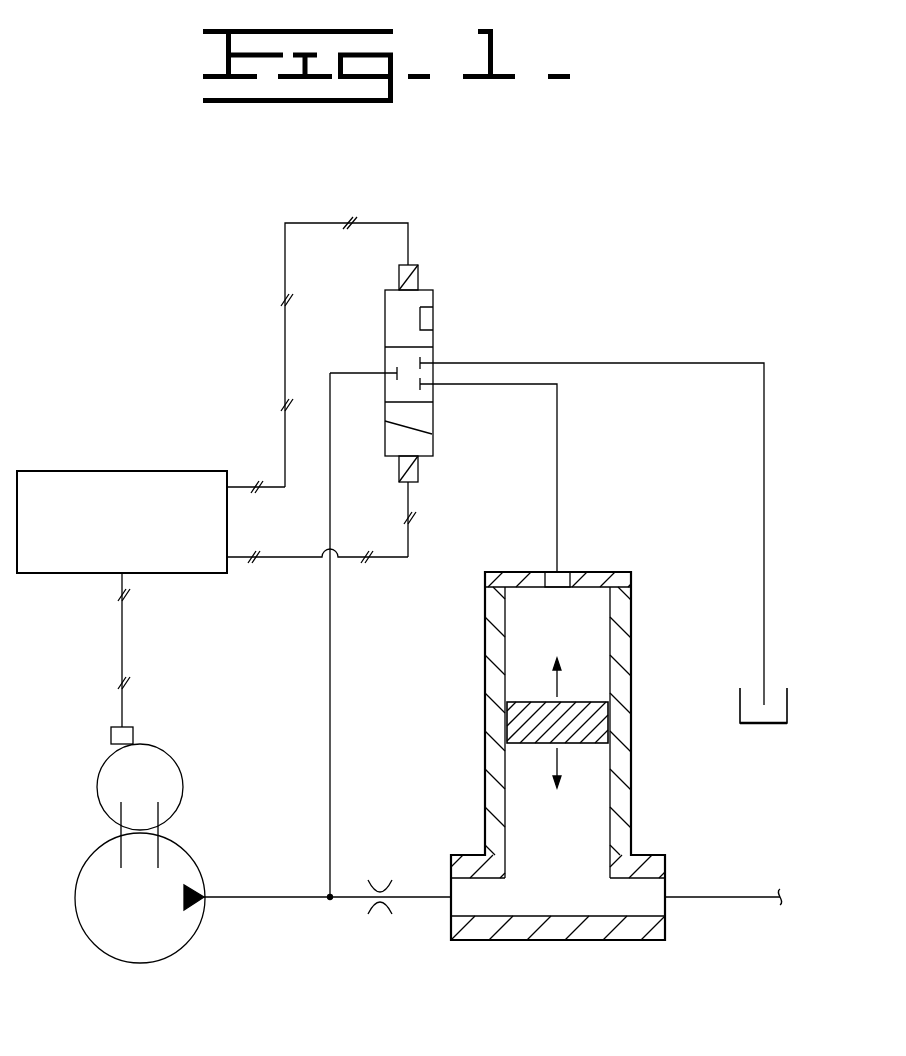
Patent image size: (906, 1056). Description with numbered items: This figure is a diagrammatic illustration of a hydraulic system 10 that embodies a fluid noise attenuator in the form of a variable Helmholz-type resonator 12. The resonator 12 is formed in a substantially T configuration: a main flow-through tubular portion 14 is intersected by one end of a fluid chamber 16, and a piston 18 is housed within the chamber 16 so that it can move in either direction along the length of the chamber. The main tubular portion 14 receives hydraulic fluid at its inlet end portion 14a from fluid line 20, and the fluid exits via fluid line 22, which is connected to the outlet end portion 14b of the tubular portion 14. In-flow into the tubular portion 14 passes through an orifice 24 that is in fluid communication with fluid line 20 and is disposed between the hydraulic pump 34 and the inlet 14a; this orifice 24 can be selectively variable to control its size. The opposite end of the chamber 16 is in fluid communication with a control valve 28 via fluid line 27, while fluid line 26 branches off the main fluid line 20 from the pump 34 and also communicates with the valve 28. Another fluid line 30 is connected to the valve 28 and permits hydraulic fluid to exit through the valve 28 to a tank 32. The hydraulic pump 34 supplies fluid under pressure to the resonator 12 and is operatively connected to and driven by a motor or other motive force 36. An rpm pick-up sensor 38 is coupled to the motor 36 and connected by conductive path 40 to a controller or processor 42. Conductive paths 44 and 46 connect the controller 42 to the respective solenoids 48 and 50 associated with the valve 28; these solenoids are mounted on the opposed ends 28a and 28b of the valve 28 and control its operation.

The hydraulic system 10 is at (690, 158).
The variable Helmholz-type resonator 12 is at (535, 945).
The main flow-through tubular portion 14 is at (595, 930).
The inlet end portion 14a is at (448, 905).
The outlet end portion 14b is at (668, 905).
The fluid chamber 16 is at (595, 653).
The piston 18 is at (603, 730).
The fluid line 20 is at (348, 897).
The fluid line 22 is at (723, 897).
The orifice 24 is at (378, 890).
The fluid line 26 is at (330, 730).
The fluid line 27 is at (560, 455).
The control valve 28 is at (420, 330).
The end of valve 28a is at (395, 292).
The end of valve 28b is at (392, 458).
The fluid line 30 is at (764, 535).
The tank 32 is at (787, 705).
The hydraulic pump 34 is at (93, 918).
The motor 36 is at (107, 785).
The rpm pick-up sensor 38 is at (111, 737).
The conductive path 40 is at (122, 655).
The controller 42 is at (88, 471).
The conductive path 44 is at (317, 223).
The conductive path 46 is at (278, 557).
The solenoid 48 is at (420, 280).
The solenoid 50 is at (420, 472).